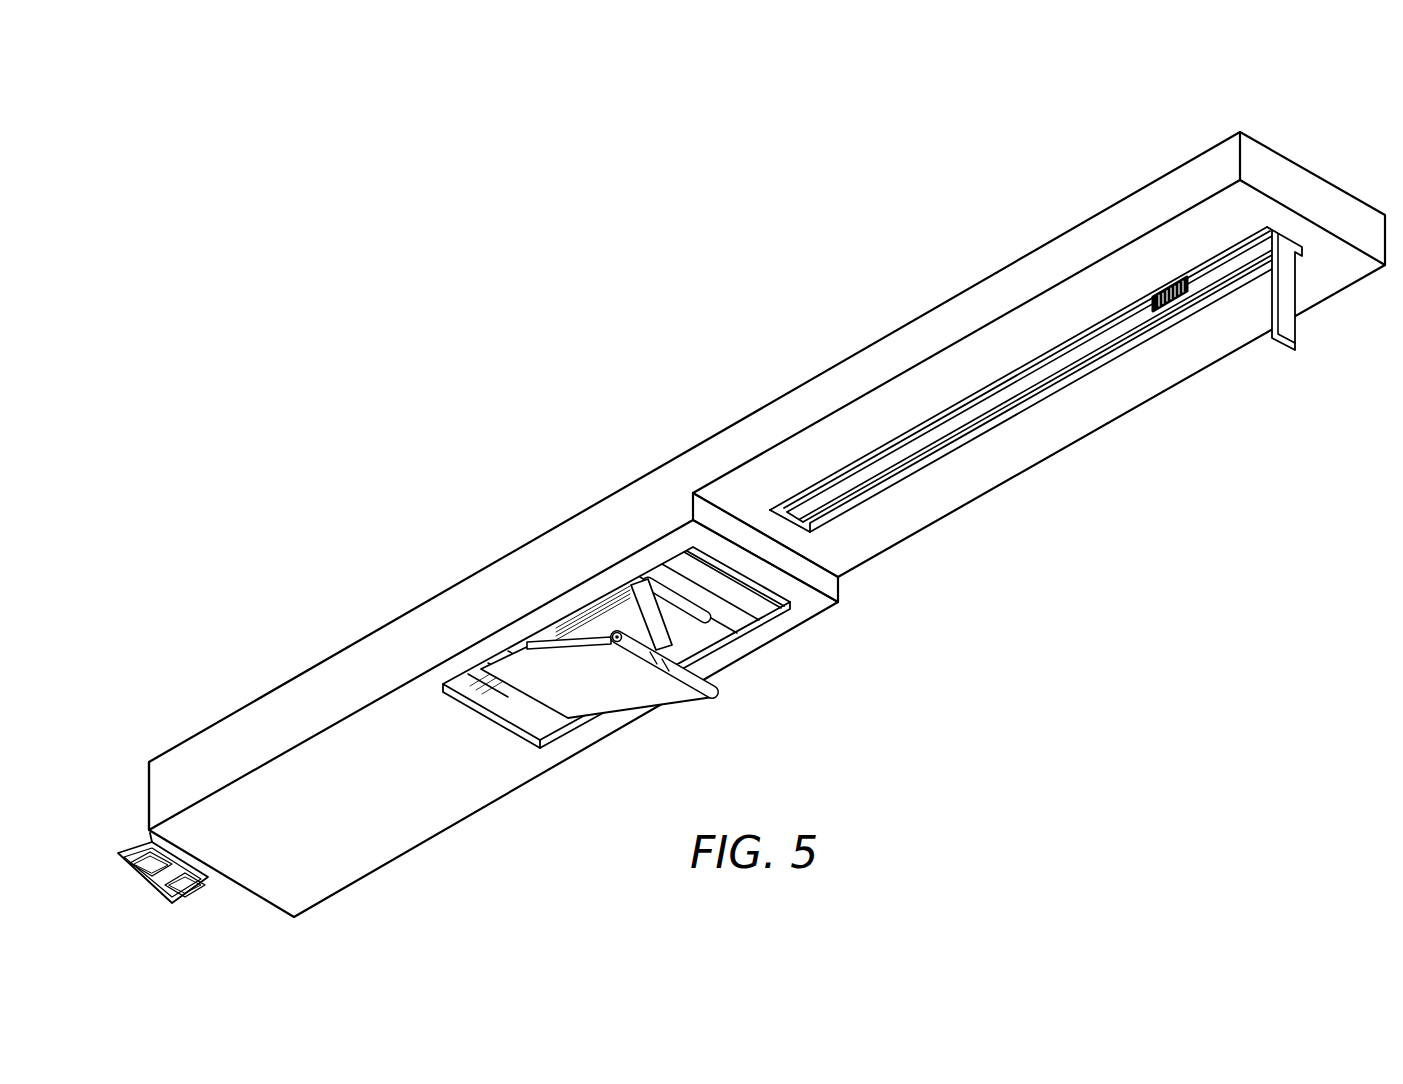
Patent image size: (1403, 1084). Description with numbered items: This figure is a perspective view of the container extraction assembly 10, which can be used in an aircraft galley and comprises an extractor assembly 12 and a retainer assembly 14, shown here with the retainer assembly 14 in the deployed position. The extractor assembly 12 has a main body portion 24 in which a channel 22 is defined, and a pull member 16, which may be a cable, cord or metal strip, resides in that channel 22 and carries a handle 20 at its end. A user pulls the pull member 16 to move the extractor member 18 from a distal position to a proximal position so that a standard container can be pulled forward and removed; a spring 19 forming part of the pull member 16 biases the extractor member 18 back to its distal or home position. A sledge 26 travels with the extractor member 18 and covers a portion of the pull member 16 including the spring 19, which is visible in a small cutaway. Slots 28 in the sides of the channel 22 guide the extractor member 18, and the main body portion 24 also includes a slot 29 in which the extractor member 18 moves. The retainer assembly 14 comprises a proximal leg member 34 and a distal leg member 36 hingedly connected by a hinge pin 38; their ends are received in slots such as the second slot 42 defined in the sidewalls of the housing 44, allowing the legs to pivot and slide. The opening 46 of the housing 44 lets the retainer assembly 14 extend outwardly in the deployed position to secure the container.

The container extraction assembly 10 is at (1044, 178).
The extractor assembly 12 is at (1318, 128).
The retainer assembly 14 is at (633, 775).
The pull member 16 is at (625, 633).
The extractor member 18 is at (1291, 324).
The spring 19 is at (1175, 309).
The handle 20 is at (172, 903).
The channel 22 is at (608, 616).
The main body portion 24 is at (884, 354).
The sledge 26 is at (1146, 316).
The slots 28 is at (1018, 398).
The slot 29 is at (840, 556).
The proximal leg member 34 is at (583, 690).
The distal leg member 36 is at (657, 627).
The hinge pin 38 is at (612, 637).
The second slot 42 is at (677, 640).
The housing 44 is at (317, 860).
The opening 46 is at (774, 613).